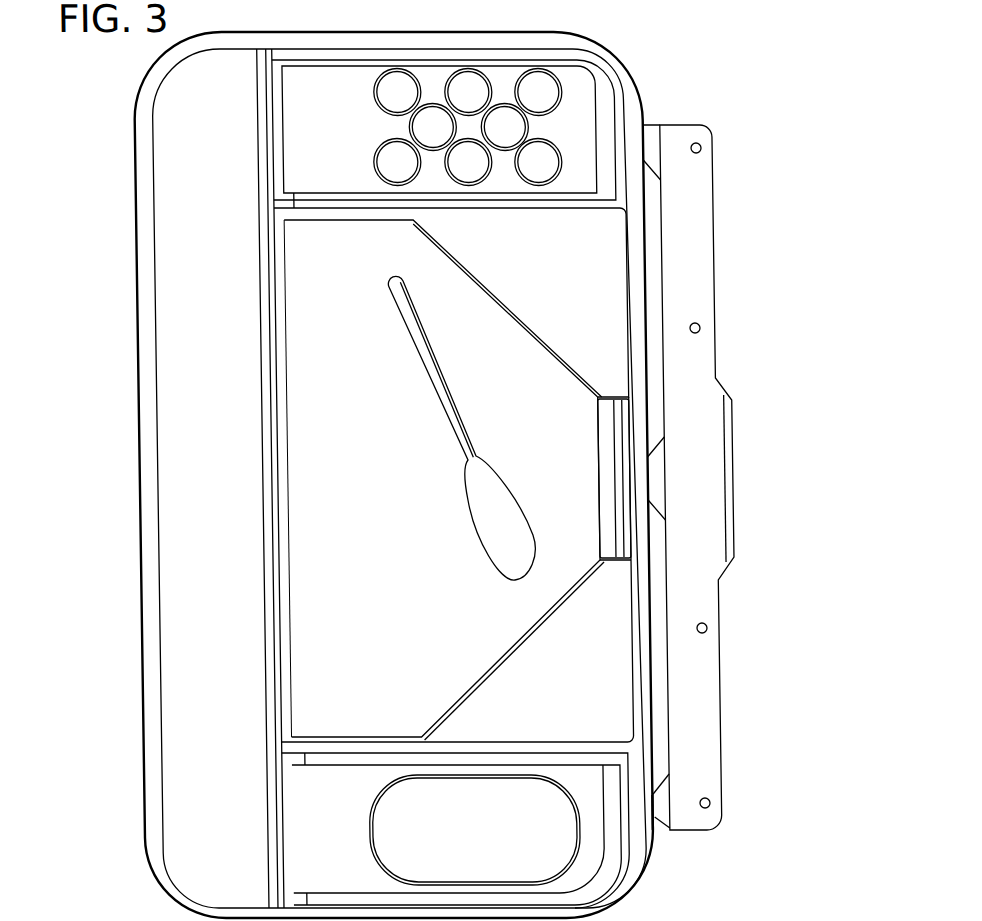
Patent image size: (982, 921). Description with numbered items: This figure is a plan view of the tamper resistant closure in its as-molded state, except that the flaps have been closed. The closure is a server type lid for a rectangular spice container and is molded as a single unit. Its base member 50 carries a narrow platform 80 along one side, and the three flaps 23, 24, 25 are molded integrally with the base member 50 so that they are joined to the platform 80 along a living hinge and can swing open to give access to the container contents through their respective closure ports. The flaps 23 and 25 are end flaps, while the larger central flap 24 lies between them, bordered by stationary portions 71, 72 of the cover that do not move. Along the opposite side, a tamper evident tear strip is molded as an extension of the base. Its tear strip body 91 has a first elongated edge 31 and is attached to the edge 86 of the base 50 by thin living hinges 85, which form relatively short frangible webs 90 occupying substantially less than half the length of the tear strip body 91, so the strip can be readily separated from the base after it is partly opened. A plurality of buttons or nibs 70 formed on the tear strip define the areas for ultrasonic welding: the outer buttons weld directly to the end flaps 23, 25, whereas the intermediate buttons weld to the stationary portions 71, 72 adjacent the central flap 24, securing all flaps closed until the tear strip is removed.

The flap 23 is at (450, 842).
The central flap 24 is at (381, 537).
The flap 25 is at (338, 145).
The first elongated edge 31 is at (715, 457).
The base member 50 is at (625, 877).
The buttons or nibs 70 is at (698, 147).
The stationary portion 71 is at (540, 289).
The stationary portion 72 is at (536, 695).
The narrow platform 80 is at (208, 491).
The living hinge 85 is at (651, 795).
The edge of the base 86 is at (639, 856).
The frangible webs 90 is at (654, 126).
The tear strip body 91 is at (697, 236).